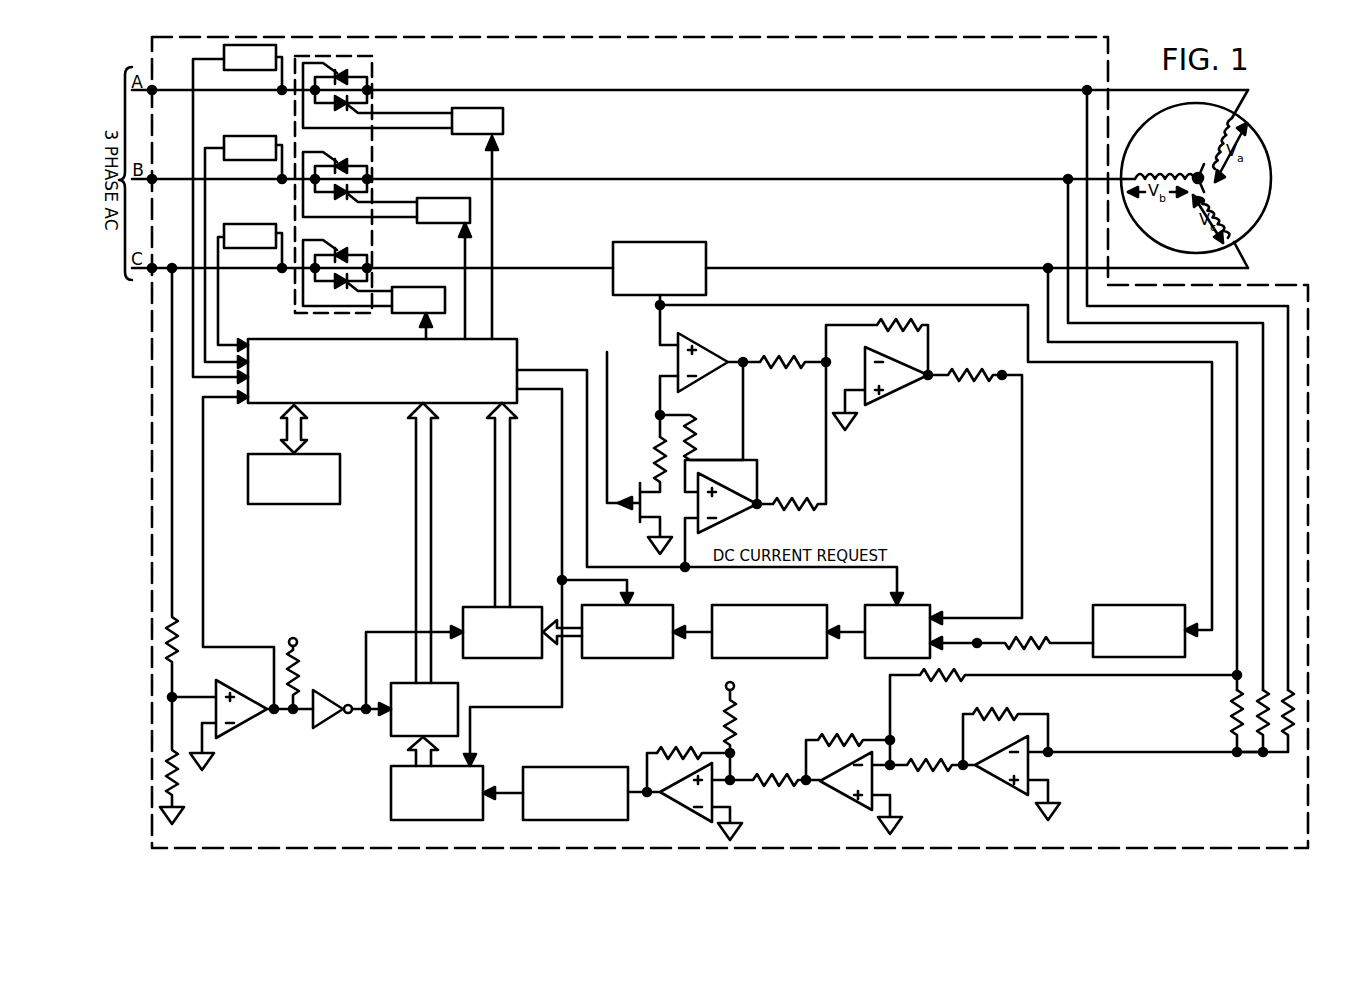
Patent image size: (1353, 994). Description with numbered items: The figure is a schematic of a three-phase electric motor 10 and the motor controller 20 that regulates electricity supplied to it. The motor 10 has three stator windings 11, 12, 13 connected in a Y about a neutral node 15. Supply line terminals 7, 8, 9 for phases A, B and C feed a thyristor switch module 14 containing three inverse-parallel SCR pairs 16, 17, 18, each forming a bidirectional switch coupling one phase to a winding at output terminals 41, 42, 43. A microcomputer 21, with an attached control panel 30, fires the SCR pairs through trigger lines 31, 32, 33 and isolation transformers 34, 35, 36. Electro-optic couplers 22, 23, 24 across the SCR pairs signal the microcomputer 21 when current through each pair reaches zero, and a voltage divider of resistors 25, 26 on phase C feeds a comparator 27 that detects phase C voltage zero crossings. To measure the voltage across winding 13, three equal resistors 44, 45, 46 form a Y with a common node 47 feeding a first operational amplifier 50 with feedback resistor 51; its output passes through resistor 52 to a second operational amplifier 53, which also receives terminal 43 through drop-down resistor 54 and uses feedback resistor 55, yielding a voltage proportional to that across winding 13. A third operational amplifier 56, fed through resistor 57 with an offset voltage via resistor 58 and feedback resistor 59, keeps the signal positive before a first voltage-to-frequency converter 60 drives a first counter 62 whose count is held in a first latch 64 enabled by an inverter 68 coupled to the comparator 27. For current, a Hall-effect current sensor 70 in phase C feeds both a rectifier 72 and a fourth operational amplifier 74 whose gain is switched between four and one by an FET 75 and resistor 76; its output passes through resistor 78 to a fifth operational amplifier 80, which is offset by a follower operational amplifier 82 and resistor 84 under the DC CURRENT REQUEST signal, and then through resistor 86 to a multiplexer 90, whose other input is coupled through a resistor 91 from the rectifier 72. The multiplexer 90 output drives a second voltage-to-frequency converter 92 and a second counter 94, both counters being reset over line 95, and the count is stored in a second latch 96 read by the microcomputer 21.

The supply line terminal 7 is at (156, 88).
The supply line terminal 8 is at (156, 177).
The supply line terminal 9 is at (158, 266).
The three-phase electric motor 10 is at (1244, 207).
The stator winding 11 is at (1212, 118).
The stator winding 12 is at (1182, 172).
The stator winding 13 is at (1232, 222).
The thyristor switch module 14 is at (372, 62).
The neutral node 15 is at (1197, 173).
The SCR pair 16 is at (372, 88).
The SCR pair 17 is at (370, 166).
The SCR pair 18 is at (318, 283).
The motor controller 20 is at (284, 832).
The microcomputer 21 is at (370, 404).
The electro-optic coupler 22 is at (262, 72).
The electro-optic coupler 23 is at (268, 134).
The electro-optic coupler 24 is at (268, 223).
The resistor 25 is at (168, 650).
The resistor 26 is at (168, 775).
The comparator 27 is at (237, 728).
The control panel 30 is at (305, 505).
The first output line 31 is at (492, 287).
The output line 32 is at (470, 316).
The output line 33 is at (418, 325).
The isolation transformer 34 is at (472, 136).
The isolation transformer 35 is at (455, 225).
The isolation transformer 36 is at (420, 286).
The output terminal 41 is at (1085, 88).
The output terminal 42 is at (1066, 177).
The output terminal 43 is at (1046, 266).
The resistor 44 is at (1291, 732).
The resistor 45 is at (1258, 750).
The resistor 46 is at (1232, 728).
The common node 47 is at (1263, 760).
The first operational amplifier 50 is at (1000, 787).
The feedback resistor 51 is at (998, 698).
The resistor 52 is at (935, 785).
The second operational amplifier 53 is at (838, 796).
The drop-down resistor 54 is at (955, 690).
The feedback resistor 55 is at (825, 740).
The third operational amplifier 56 is at (700, 815).
The resistor 57 is at (765, 785).
The resistor 58 is at (736, 745).
The feedback resistor 59 is at (675, 753).
The first voltage-to-frequency converter 60 is at (556, 766).
The first counter 62 is at (392, 783).
The first set of data latches 64 is at (459, 697).
The inverter 68 is at (340, 722).
The Hall-effect current sensor 70 is at (700, 242).
The rectifier circuit 72 is at (1158, 604).
The fourth operational amplifier 74 is at (700, 345).
The FET 75 is at (640, 487).
The resistor 76 is at (700, 418).
The resistor 78 is at (775, 368).
The fifth operational amplifier 80 is at (888, 398).
The follower operational amplifier 82 is at (722, 524).
The resistor 84 is at (780, 498).
The resistor 86 is at (958, 382).
The multiplexer 90 is at (903, 604).
The resistor 91 is at (1043, 640).
The second voltage-to-frequency converter 92 is at (760, 605).
The second counter 94 is at (645, 659).
The reset line 95 is at (560, 525).
The second latch 96 is at (481, 606).